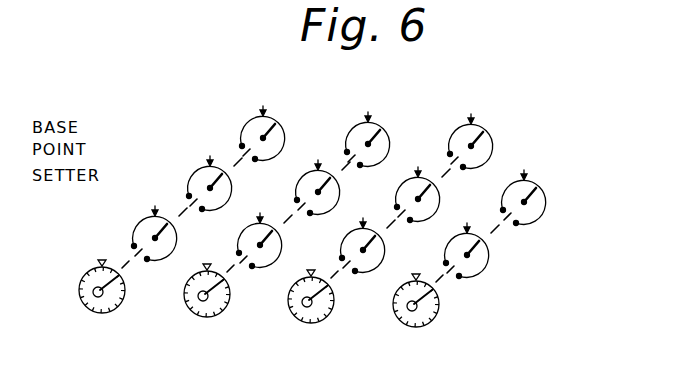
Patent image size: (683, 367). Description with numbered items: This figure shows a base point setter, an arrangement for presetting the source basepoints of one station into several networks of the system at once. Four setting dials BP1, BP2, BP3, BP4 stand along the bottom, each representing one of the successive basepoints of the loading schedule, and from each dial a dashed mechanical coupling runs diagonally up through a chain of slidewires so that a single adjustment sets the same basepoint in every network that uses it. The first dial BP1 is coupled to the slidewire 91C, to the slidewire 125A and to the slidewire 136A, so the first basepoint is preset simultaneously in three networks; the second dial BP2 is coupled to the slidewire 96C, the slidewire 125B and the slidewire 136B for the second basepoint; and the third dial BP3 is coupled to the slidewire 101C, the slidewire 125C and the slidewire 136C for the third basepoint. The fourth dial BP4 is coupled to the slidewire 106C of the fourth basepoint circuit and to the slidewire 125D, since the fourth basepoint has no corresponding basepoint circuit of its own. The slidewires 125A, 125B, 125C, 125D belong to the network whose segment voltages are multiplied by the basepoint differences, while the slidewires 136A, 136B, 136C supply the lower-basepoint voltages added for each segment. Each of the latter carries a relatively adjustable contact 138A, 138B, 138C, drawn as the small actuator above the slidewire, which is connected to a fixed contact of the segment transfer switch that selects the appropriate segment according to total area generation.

The base point setter dial 1 BP1 is at (102, 300).
The base point setter dial 2 BP2 is at (209, 303).
The base point setter dial 3 BP3 is at (313, 309).
The base point setter dial 4 BP4 is at (418, 313).
The slidewire 91C is at (181, 234).
The slidewire 96C is at (285, 241).
The slidewire 101C is at (383, 246).
The slidewire 106C is at (493, 251).
The slidewire 125A is at (233, 188).
The slidewire 125B is at (340, 191).
The slidewire 125C is at (443, 195).
The slidewire 125D is at (550, 201).
The slidewire 136A is at (284, 129).
The slidewire 136B is at (387, 130).
The slidewire 136C is at (494, 135).
The relatively adjustable contact 138A is at (265, 112).
The relatively adjustable contact 138B is at (368, 115).
The relatively adjustable contact 138C is at (473, 118).